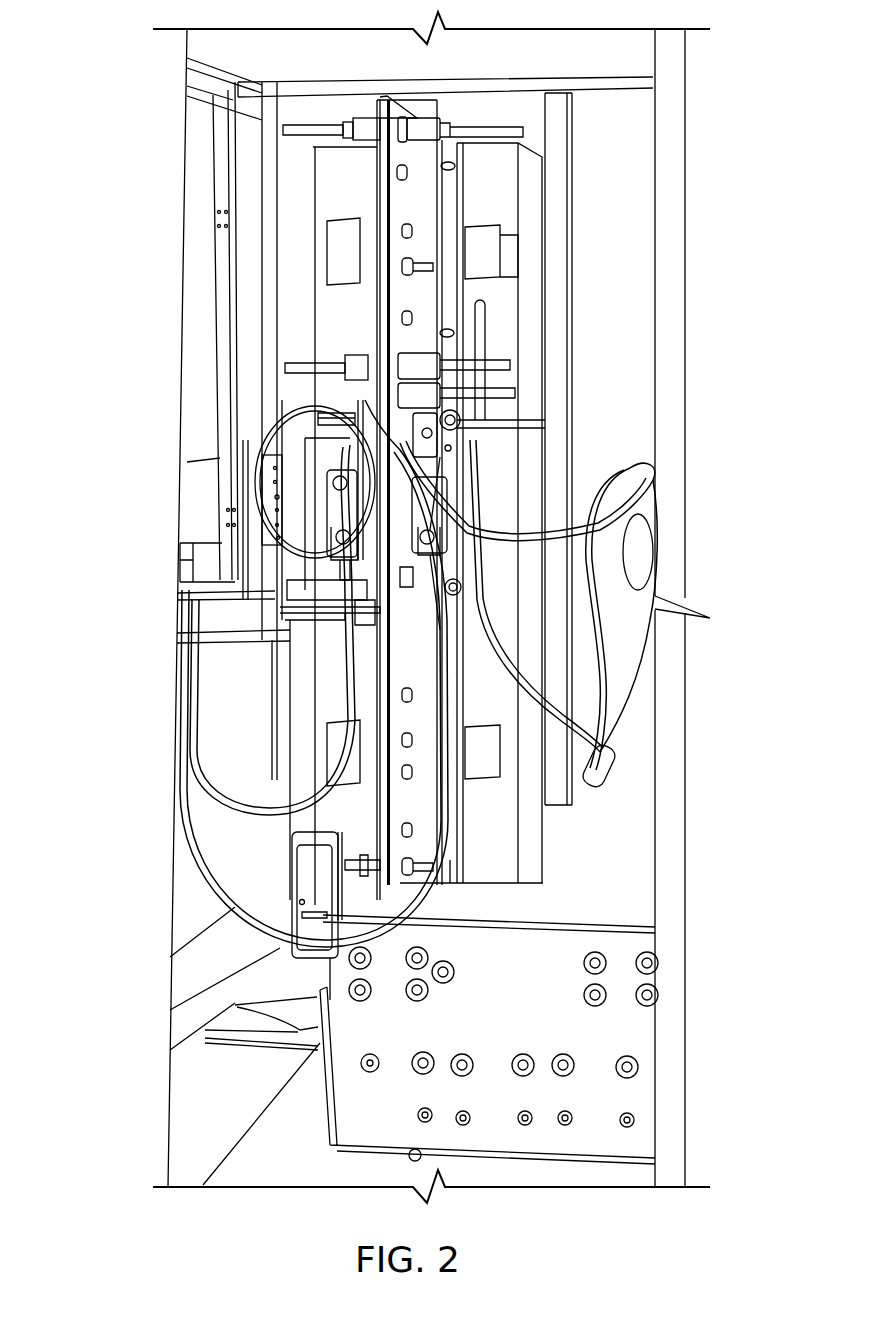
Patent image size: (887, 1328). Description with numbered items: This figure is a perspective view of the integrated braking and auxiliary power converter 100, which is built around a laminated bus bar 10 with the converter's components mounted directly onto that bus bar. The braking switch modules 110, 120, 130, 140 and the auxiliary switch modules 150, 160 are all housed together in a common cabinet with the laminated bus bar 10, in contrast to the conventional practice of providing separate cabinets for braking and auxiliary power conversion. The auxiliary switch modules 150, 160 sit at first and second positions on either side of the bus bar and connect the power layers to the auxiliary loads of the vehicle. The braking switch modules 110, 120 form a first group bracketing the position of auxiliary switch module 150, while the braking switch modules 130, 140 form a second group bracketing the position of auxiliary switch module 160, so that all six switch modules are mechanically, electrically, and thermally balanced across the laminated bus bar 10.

The integrated braking and auxiliary power converter 100 is at (121, 33).
The laminated bus bar 10 is at (372, 96).
The braking switch module 110 is at (320, 266).
The braking switch module 120 is at (322, 763).
The braking switch module 130 is at (500, 212).
The braking switch module 140 is at (650, 755).
The auxiliary switch module 150 is at (250, 478).
The auxiliary switch module 160 is at (557, 410).